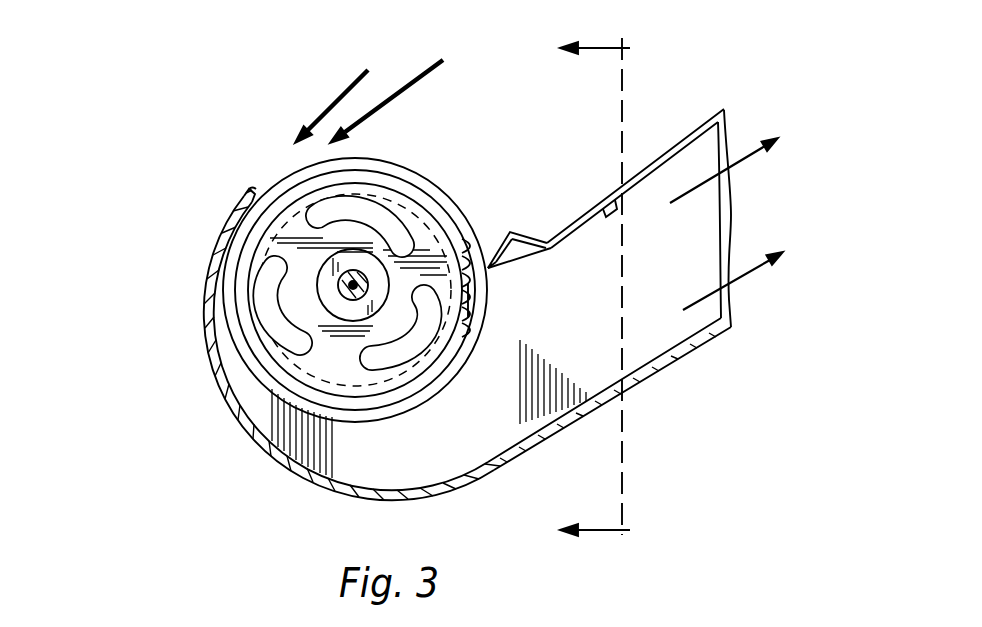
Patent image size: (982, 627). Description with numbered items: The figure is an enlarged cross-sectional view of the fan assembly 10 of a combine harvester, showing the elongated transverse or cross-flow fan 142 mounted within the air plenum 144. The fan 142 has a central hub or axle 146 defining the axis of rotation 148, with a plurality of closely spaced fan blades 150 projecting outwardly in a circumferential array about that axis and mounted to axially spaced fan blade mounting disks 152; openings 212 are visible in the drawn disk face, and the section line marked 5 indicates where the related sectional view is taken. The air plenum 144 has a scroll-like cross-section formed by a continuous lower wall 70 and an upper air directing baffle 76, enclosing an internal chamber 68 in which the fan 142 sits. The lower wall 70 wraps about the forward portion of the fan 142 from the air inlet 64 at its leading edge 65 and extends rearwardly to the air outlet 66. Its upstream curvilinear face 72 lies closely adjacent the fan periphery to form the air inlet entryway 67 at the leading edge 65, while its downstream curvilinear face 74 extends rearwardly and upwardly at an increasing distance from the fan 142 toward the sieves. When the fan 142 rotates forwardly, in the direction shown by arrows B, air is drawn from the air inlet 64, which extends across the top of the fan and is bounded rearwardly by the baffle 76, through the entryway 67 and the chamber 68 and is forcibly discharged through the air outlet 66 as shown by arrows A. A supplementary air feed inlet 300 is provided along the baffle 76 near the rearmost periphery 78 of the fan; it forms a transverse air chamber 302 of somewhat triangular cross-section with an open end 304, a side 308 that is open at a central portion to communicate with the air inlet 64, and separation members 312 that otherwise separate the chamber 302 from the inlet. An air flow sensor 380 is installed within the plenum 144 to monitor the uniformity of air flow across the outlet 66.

The fan assembly 10 is at (198, 396).
The air inlet 64 is at (404, 119).
The leading edge 65 is at (247, 191).
The air outlet 66 is at (700, 205).
The air inlet entryway 67 is at (253, 194).
The internal chamber 68 is at (457, 447).
The lower wall 70 is at (280, 465).
The upstream curvilinear face 72 is at (222, 231).
The downstream curvilinear face 74 is at (667, 373).
The baffle 76 is at (678, 136).
The rearmost periphery 78 is at (492, 274).
The cross-flow fan 142 is at (258, 391).
The air plenum 144 is at (720, 362).
The hub or axle 146 is at (337, 300).
The axis of rotation 148 is at (351, 287).
The fan blades 150 is at (464, 300).
The fan blade mounting disks 152 is at (292, 223).
The slots 212 is at (280, 277).
The supplementary air feed inlet 300 is at (526, 222).
The air channel or chamber 302 is at (518, 254).
The open end 304 is at (527, 247).
The side 308 is at (485, 242).
The separation members 312 is at (505, 233).
The air flow sensor 380 is at (620, 217).
The arrows A is at (738, 157).
The arrows B is at (410, 88).
The section line 5- 5 is at (611, 289).